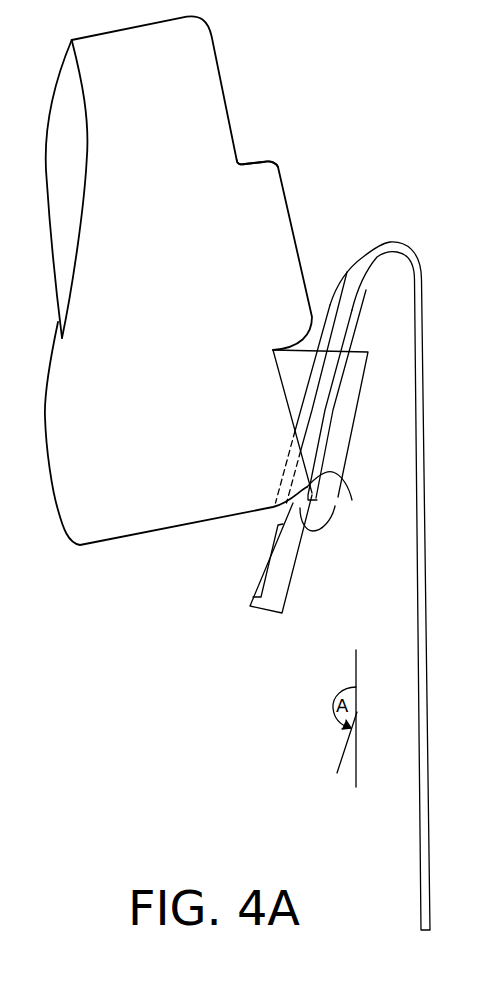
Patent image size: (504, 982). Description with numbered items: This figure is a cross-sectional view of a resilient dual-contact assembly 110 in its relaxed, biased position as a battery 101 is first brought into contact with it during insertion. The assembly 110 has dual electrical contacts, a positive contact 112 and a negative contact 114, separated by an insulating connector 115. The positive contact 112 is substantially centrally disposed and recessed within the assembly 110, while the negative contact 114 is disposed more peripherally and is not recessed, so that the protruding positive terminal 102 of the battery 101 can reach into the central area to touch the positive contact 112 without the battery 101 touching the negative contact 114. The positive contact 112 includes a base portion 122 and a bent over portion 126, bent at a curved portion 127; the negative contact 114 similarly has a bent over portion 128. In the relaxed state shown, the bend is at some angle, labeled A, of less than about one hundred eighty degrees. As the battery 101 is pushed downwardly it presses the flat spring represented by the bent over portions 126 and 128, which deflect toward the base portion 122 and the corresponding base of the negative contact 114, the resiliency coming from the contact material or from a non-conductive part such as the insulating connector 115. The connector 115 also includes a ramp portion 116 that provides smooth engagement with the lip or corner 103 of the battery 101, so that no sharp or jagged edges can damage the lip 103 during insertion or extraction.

The battery 101 is at (167, 299).
The positive terminal 102 is at (272, 180).
The lip/corner 103 is at (323, 503).
The dual-contact assembly 110 is at (400, 206).
The positive contact 112 is at (330, 424).
The negative contact 114 is at (327, 326).
The insulating connector 115 is at (336, 509).
The ramp portion 116 is at (308, 531).
The base portion 122 is at (428, 707).
The bent over portion 126 is at (353, 314).
The curved portion 127 is at (391, 275).
The bent over portion 128 is at (345, 265).